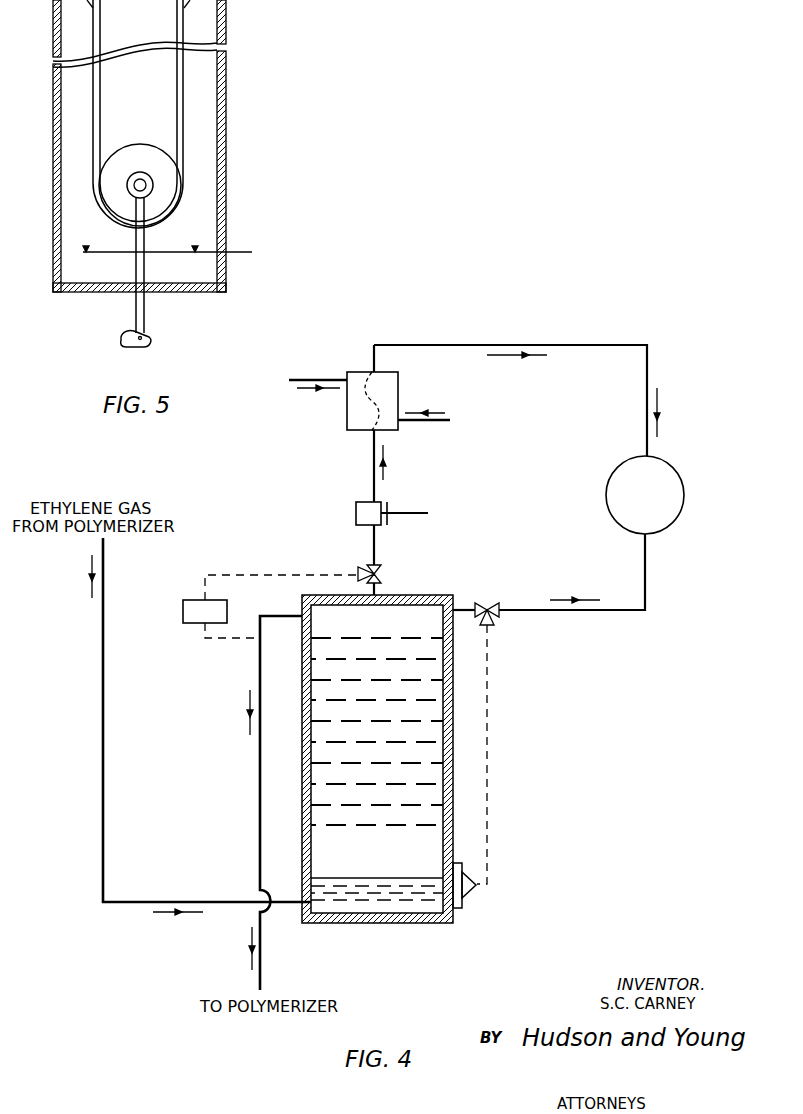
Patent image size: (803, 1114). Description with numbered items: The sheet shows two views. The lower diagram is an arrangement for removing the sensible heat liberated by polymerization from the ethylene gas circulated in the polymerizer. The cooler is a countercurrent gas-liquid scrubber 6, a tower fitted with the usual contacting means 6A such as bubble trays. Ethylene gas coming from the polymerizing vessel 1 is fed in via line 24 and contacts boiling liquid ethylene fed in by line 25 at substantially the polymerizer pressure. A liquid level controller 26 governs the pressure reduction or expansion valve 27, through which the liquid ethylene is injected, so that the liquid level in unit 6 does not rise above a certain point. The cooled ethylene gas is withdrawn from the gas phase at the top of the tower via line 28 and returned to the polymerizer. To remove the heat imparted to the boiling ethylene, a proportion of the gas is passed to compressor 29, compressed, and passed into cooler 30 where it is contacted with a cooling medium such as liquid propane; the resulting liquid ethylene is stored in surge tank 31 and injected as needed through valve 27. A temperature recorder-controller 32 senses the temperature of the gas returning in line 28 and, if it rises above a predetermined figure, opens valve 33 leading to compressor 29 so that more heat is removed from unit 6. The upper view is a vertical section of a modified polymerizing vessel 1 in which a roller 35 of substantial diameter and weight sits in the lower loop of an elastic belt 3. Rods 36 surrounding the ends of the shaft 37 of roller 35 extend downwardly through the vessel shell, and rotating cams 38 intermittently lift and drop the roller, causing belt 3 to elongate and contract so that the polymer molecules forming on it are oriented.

In FIG. 5, the polymerizing vessel 1 is at (227, 131).
In FIG. 5, the belt 3 is at (93, 100).
In FIG. 5, the roller 35 is at (145, 144).
In FIG. 5, the shaft 37 is at (139, 181).
In FIG. 5, the rods 36 is at (136, 310).
In FIG. 5, the rotating cams 38 is at (150, 336).
In FIG. 4, the countercurrent gas-liquid scrubber 6 is at (448, 712).
In FIG. 4, the contacting means 6A is at (335, 743).
In FIG. 4, the line 24 is at (290, 905).
In FIG. 4, the line 25 is at (464, 606).
In FIG. 4, the liquid level controller 26 is at (470, 905).
In FIG. 4, the pressure reduction or expansion valve 27 is at (495, 616).
In FIG. 4, the line 28 is at (285, 618).
In FIG. 4, the compressor 29 is at (356, 512).
In FIG. 4, the cooler 30 is at (398, 392).
In FIG. 4, the surge tank 31 is at (617, 469).
In FIG. 4, the temperature recorder-controller 32 is at (181, 616).
In FIG. 4, the valve 33 is at (380, 572).